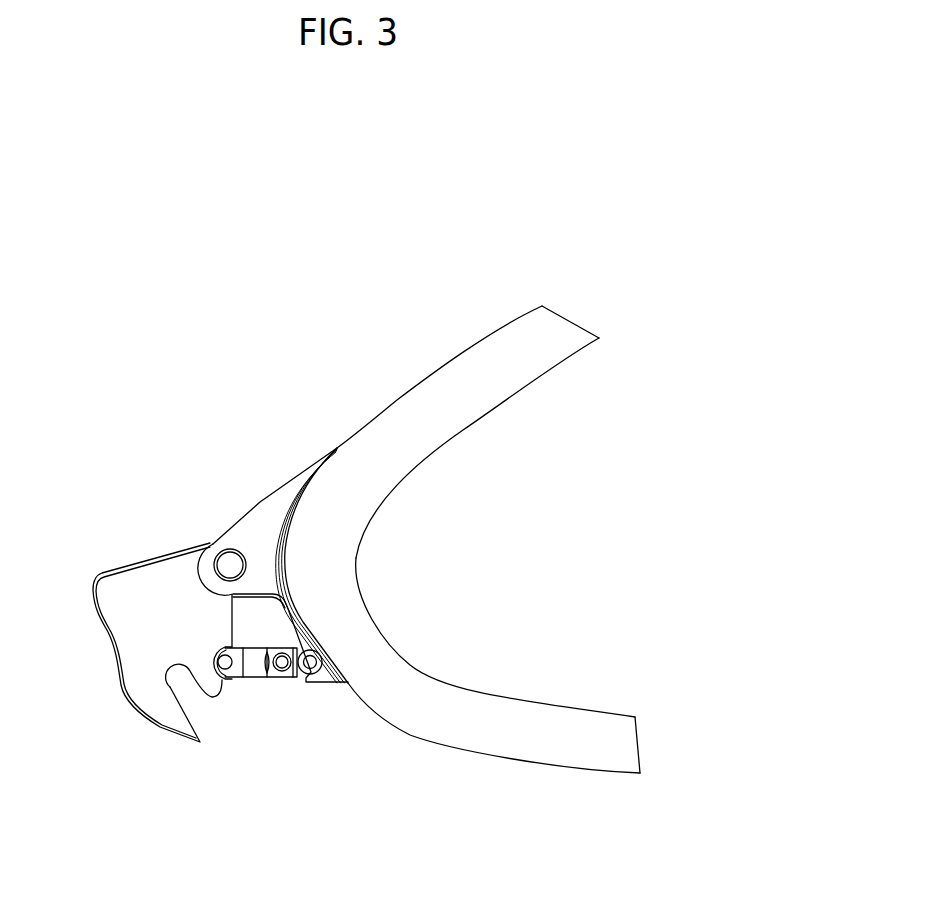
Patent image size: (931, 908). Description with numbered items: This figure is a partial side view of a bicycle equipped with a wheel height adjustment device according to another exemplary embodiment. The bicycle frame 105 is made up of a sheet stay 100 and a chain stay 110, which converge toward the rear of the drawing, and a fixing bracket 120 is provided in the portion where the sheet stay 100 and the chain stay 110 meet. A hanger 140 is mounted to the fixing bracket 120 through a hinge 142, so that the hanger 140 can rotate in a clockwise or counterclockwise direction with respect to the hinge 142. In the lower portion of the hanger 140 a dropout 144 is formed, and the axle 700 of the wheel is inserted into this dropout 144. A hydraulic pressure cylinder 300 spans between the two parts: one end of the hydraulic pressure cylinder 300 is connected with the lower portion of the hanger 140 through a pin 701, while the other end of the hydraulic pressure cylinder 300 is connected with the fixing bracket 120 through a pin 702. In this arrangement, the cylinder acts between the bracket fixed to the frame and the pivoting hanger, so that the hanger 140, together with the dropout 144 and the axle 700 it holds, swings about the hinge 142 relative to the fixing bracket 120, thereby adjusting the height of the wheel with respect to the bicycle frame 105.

The sheet stay 100 is at (510, 382).
The bicycle frame 105 is at (462, 539).
The chain stay 110 is at (494, 665).
The fixing bracket 120 is at (246, 602).
The hanger 140 is at (145, 659).
The hinge 142 is at (228, 565).
The dropout 144 is at (193, 695).
The hydraulic pressure cylinder 300 is at (276, 696).
The axle 700 is at (185, 683).
The pin 701 is at (224, 668).
The pin 702 is at (316, 667).